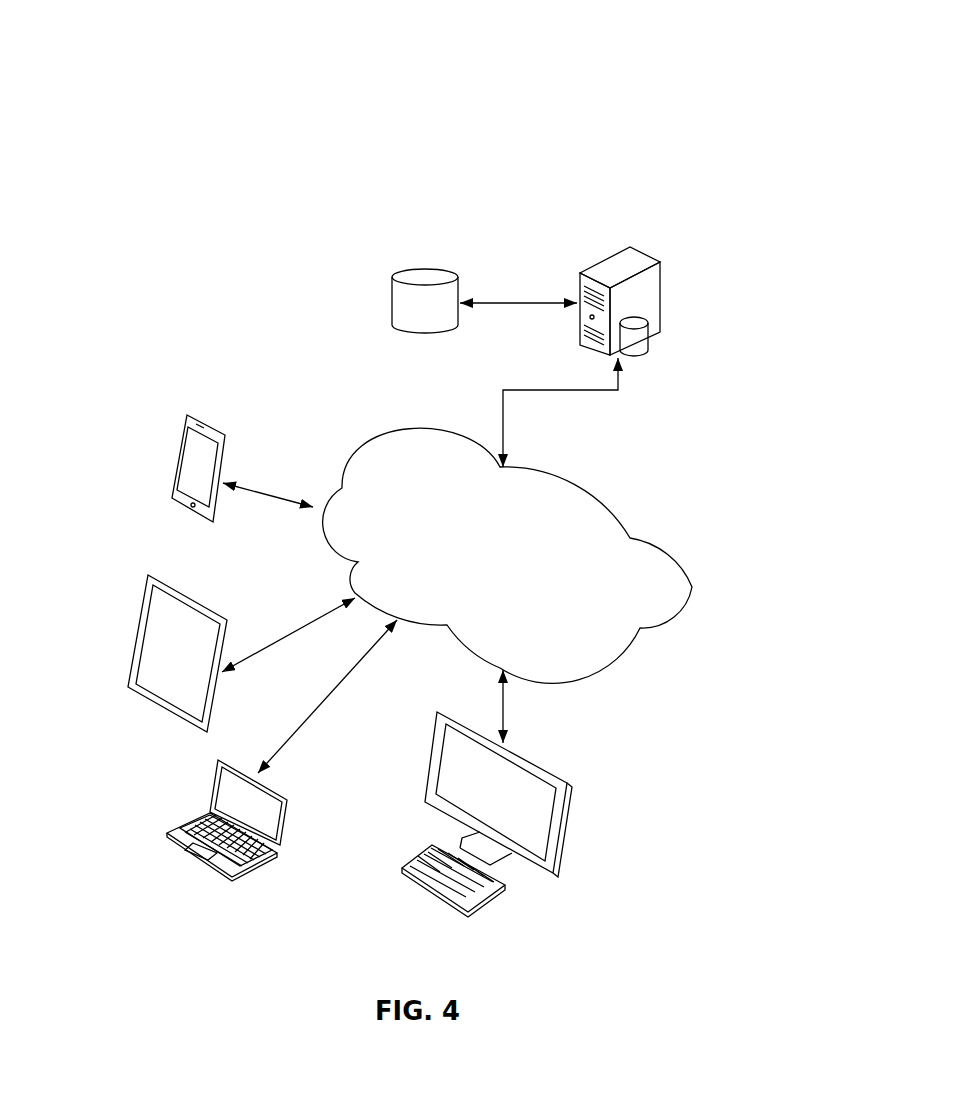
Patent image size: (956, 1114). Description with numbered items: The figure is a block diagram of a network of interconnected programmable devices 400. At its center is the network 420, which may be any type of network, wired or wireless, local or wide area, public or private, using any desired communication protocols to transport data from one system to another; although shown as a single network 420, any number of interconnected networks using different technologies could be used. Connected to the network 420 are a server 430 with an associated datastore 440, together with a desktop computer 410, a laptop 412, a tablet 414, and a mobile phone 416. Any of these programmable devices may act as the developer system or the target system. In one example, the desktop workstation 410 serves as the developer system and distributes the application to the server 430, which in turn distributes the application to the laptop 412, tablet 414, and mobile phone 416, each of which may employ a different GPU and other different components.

The network of interconnected programmable devices 400 is at (475, 90).
The desktop computer 410 is at (552, 814).
The laptop 412 is at (269, 833).
The tablet 414 is at (139, 684).
The mobile phone 416 is at (142, 463).
The network 420 is at (576, 555).
The server 430 is at (682, 294).
The datastore 440 is at (379, 268).